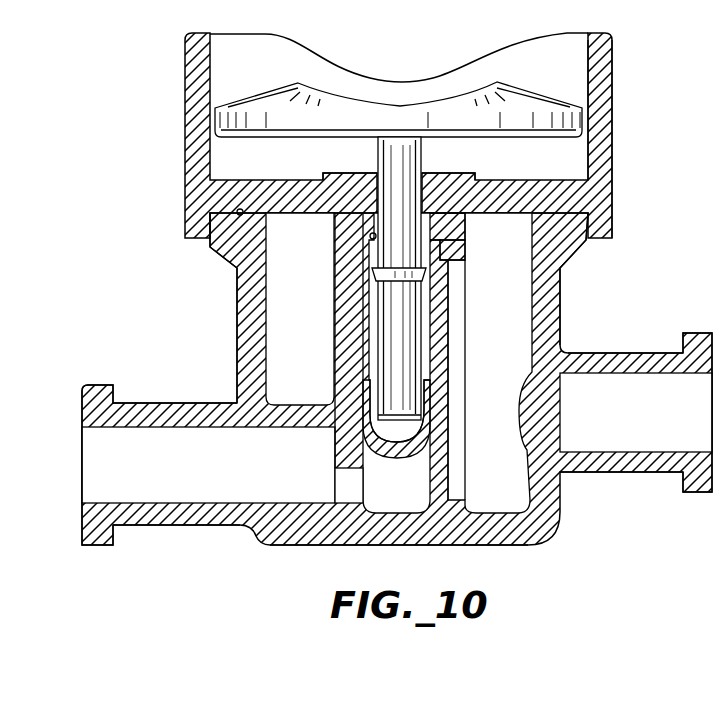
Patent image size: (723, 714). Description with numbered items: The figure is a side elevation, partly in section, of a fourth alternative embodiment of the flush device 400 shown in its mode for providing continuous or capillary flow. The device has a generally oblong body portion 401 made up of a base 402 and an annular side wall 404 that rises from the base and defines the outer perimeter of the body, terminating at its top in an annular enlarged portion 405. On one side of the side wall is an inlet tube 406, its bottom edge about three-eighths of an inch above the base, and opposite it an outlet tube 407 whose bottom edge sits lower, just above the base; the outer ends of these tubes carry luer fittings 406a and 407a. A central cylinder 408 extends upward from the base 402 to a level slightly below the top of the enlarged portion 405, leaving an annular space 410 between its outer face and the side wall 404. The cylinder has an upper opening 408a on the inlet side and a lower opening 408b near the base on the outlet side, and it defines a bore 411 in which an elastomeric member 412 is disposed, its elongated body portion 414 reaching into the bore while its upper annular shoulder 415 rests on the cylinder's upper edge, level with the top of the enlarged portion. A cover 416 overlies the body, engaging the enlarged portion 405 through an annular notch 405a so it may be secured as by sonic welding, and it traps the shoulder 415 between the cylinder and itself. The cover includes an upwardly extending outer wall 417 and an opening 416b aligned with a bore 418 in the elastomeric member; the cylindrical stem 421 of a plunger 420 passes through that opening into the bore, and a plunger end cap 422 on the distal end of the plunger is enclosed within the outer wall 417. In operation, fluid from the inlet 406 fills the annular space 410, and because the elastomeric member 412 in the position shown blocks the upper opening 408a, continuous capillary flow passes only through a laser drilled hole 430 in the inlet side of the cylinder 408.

The flush device 400 is at (625, 95).
The body portion 401 is at (566, 270).
The base 402 is at (487, 546).
The annular side wall 404 is at (240, 305).
The annular enlarged portion 405 is at (220, 242).
The annular notch 405a is at (236, 210).
The inlet tube 406 is at (583, 470).
The luer fitting 406a is at (702, 494).
The outlet tube 407 is at (156, 527).
The luer fitting 407a is at (96, 547).
The central cylinder 408 is at (344, 312).
The upper opening 408a is at (452, 250).
The opening 408b is at (338, 485).
The annular space 410 is at (290, 338).
The bore 411 is at (405, 498).
The elastomeric member 412 is at (437, 320).
The elongated body portion 414 is at (366, 366).
The upper annular shoulder 415 is at (458, 232).
The cover 416 is at (184, 98).
The opening 416b is at (376, 186).
The outer wall 417 is at (598, 130).
The bore 418 is at (370, 236).
The plunger 420 is at (333, 94).
The stem 421 is at (420, 158).
The plunger end cap 422 is at (510, 84).
The laser drilled hole 430 is at (432, 442).